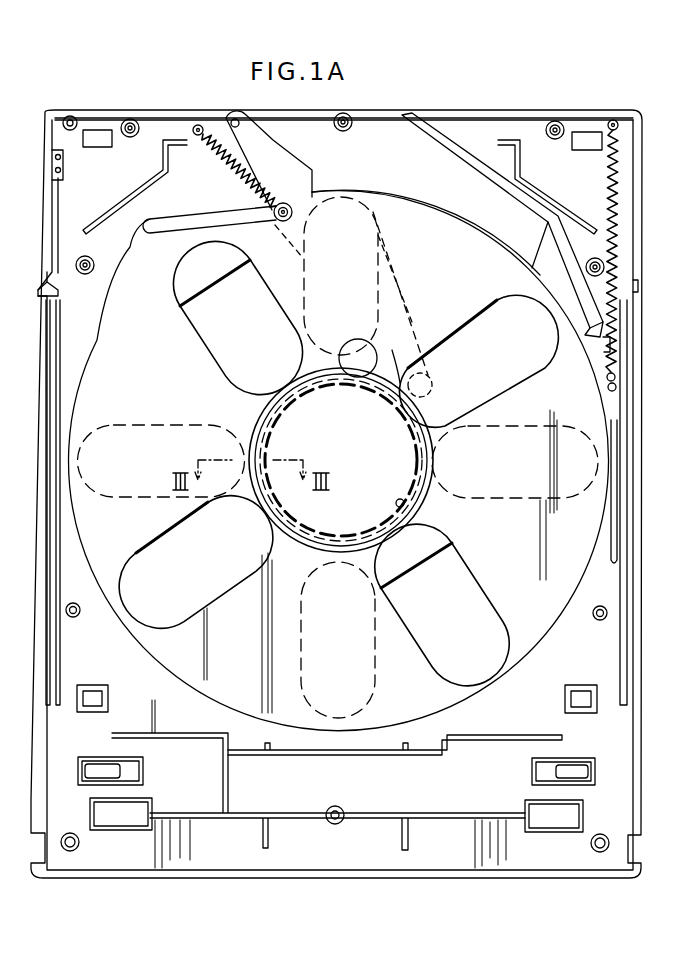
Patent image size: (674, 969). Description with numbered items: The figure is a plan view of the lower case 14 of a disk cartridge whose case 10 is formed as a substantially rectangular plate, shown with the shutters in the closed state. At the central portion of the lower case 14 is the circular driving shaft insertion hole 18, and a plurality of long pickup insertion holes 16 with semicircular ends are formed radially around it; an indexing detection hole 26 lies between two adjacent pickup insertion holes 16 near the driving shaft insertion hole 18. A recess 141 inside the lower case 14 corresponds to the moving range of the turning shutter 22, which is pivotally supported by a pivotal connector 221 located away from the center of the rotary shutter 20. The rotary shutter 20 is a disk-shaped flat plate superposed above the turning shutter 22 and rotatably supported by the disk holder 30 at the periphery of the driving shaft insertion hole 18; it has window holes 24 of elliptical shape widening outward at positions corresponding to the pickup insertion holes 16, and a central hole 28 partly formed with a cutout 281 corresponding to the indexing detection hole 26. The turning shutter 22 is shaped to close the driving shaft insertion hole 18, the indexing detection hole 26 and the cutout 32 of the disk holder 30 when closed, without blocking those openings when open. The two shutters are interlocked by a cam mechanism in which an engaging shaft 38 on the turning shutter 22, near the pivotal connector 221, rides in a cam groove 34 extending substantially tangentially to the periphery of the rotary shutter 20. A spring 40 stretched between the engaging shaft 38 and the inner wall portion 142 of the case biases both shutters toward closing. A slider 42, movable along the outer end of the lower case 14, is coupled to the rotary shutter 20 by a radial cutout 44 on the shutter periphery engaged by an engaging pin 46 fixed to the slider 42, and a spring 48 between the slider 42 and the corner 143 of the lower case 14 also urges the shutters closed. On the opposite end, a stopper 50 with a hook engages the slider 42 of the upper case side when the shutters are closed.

The case 10 is at (616, 90).
The lower case 14 is at (519, 86).
The recess 141 is at (497, 214).
The inner wall portion 142 is at (188, 127).
The corner 143 is at (611, 131).
The pickup insertion holes 16 is at (377, 283).
The driving shaft insertion hole 18 is at (405, 500).
The rotary shutter 20 is at (552, 614).
The turning shutter 22 is at (412, 322).
The pivotal connector 221 is at (275, 140).
The window holes 24 is at (190, 318).
The indexing detection hole 26 is at (430, 382).
The central hole 28 is at (418, 432).
The cutout 281 is at (372, 365).
The disk holder 30 is at (437, 487).
The cutout 32 is at (376, 364).
The cam groove 34 is at (182, 222).
The engaging shaft 38 is at (278, 221).
The spring 40 is at (218, 158).
The slider 42 is at (586, 328).
The radial cutout 44 is at (608, 382).
The engaging pin 46 is at (607, 376).
The spring 48 is at (604, 204).
The stopper 50 is at (50, 268).